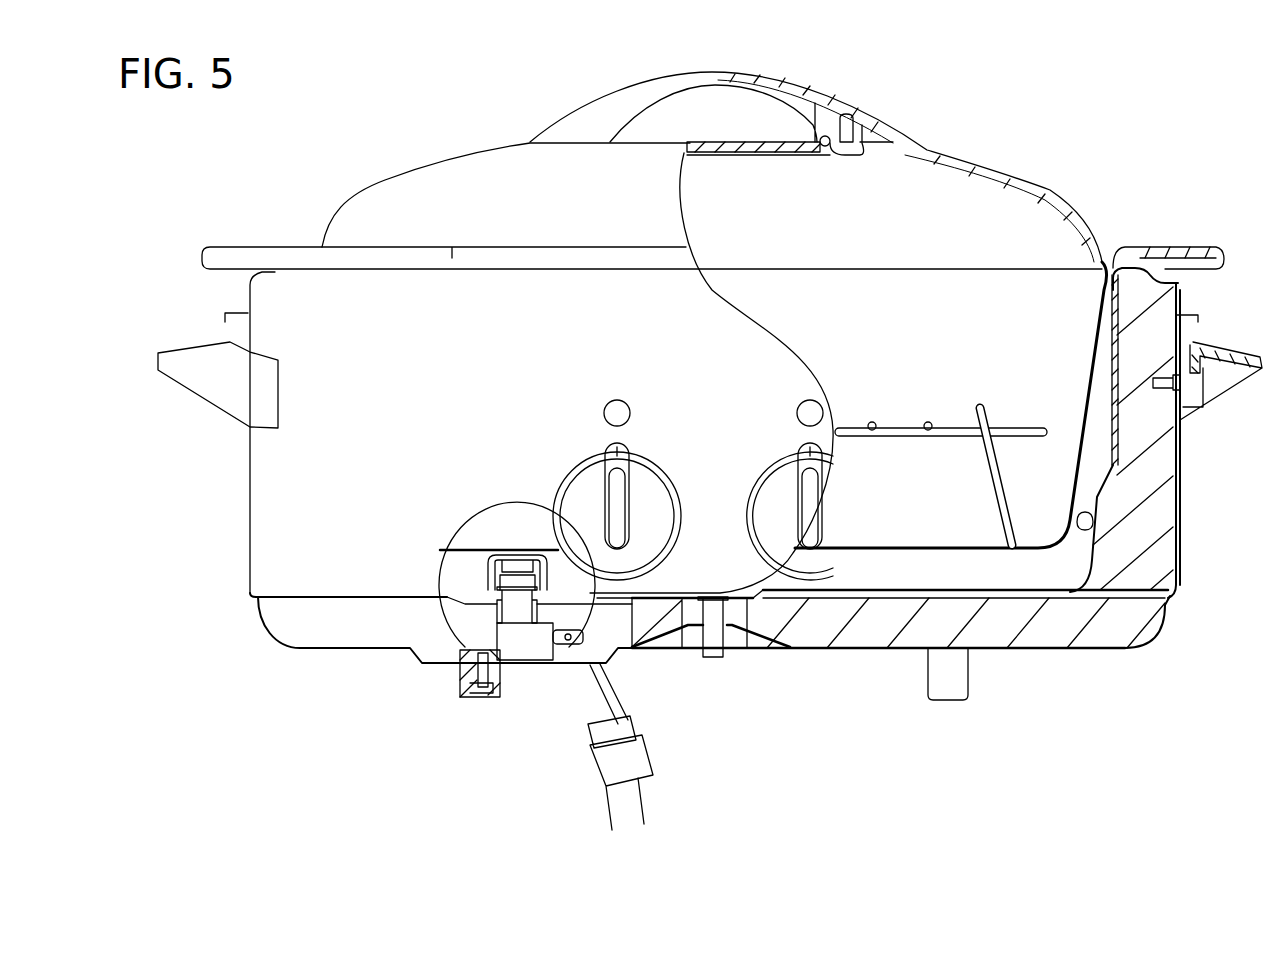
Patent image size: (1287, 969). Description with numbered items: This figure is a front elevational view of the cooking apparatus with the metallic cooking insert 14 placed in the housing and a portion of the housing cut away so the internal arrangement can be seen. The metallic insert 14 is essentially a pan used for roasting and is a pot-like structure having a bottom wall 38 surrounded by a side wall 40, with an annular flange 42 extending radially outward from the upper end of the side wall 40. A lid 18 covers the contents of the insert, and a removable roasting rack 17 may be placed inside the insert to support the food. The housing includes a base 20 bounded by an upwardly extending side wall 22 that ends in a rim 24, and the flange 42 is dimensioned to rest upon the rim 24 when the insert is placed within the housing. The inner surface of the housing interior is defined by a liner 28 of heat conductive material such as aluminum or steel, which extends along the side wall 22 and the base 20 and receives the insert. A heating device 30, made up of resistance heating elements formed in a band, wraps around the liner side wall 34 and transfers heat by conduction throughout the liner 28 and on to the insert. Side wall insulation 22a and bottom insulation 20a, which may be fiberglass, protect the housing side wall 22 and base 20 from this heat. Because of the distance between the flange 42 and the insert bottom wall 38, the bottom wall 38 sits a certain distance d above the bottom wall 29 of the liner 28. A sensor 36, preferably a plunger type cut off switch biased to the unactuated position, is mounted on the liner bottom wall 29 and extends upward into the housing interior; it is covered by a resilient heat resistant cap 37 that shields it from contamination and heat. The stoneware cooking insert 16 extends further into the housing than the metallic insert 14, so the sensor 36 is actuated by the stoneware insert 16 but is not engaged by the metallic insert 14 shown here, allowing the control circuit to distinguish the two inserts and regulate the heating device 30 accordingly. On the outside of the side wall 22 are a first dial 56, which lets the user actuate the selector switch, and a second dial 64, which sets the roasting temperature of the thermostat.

The metallic cooking insert 14 is at (226, 258).
The lid 18 is at (466, 152).
The annular flange 42 is at (1186, 247).
The side wall 40 is at (1088, 341).
The side wall 22 is at (250, 508).
The side wall insulation 22a is at (1160, 565).
The heating device 30 is at (1118, 432).
The liner side wall 34 is at (1093, 522).
The rim 24 is at (1183, 292).
The removable roasting rack 17 is at (952, 425).
The first dial 56 is at (560, 485).
The second dial 64 is at (750, 482).
The stoneware cooking insert 16 is at (861, 556).
The bottom wall of liner 29 is at (898, 600).
The bottom insulation 20a is at (812, 636).
The base 20 is at (988, 652).
The liner 28 is at (1145, 636).
The distance d is at (1027, 572).
The resilient heat resistant cap 37 is at (493, 566).
The sensor 36 is at (518, 648).
The bottom wall 38 is at (603, 600).